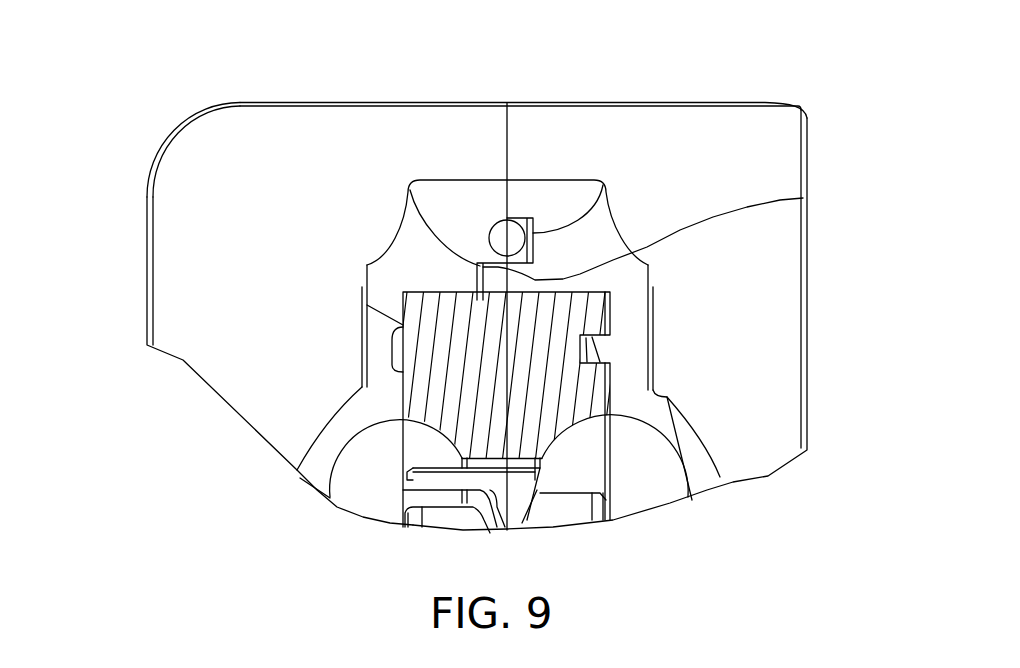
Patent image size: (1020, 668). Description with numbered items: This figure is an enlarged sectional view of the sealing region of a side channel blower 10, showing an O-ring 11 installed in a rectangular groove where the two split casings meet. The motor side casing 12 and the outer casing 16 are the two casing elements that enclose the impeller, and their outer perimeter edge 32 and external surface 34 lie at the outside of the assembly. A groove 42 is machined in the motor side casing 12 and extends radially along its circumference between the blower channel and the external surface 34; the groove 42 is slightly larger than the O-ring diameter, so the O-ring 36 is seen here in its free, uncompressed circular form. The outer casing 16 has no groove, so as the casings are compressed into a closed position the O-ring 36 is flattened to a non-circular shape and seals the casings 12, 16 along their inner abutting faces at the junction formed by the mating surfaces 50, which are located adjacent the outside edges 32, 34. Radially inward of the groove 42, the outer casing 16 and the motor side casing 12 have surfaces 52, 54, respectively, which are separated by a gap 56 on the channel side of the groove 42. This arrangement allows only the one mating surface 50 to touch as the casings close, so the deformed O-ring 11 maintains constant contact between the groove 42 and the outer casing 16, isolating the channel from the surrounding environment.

The side channel blower 10 is at (806, 63).
The O-ring 11 is at (481, 219).
The motor side casing 12 is at (818, 317).
The outer casing 16 is at (137, 269).
The outer perimeter edge 32 is at (742, 102).
The external surface 34 is at (265, 102).
The O-ring 36 is at (582, 292).
The groove 42 is at (603, 185).
The mating surfaces 50 is at (507, 120).
The surface 52 is at (408, 192).
The surface 54 is at (803, 198).
The gap 56 is at (478, 282).